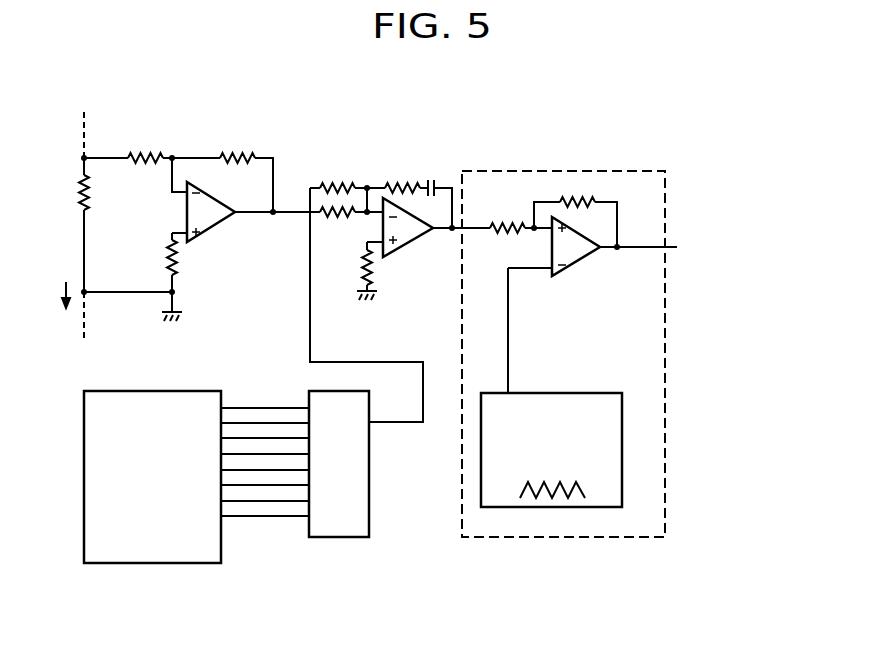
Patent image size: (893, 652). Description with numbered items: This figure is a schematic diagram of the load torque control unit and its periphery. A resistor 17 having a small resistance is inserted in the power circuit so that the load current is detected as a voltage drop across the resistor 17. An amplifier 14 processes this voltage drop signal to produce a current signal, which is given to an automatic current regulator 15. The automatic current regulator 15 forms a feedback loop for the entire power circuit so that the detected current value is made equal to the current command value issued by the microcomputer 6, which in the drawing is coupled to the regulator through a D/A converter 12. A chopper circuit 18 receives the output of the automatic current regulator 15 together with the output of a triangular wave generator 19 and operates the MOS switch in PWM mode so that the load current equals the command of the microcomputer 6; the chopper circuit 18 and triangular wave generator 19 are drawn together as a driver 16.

The resistor 17 is at (63, 157).
The amplifier 14 is at (218, 236).
The automatic current regulator 15 is at (415, 243).
The driver 16 is at (515, 538).
The chopper circuit 18 is at (587, 260).
The triangular wave generator 19 is at (593, 393).
The microcomputer 6 is at (221, 557).
The D/A converter 12 is at (369, 521).